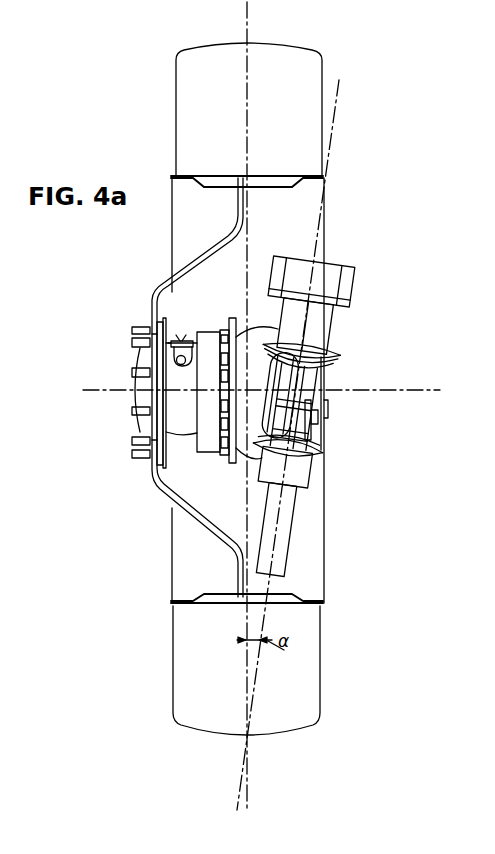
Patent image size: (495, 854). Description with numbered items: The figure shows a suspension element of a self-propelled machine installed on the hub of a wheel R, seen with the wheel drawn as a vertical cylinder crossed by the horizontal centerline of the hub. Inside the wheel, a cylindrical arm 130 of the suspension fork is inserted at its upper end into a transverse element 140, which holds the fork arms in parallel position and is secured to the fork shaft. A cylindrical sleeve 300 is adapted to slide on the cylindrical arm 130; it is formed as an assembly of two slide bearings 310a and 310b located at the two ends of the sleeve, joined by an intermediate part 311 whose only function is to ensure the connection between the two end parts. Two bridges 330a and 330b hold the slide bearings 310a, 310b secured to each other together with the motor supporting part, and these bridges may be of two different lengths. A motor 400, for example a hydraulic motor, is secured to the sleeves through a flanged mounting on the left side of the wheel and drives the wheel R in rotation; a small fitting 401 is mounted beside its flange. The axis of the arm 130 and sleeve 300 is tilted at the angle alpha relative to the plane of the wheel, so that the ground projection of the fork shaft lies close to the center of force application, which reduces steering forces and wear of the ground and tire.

The transverse element 140 is at (345, 289).
The slide bearing 310a is at (318, 331).
The cylindrical sleeve 300 is at (336, 344).
The bridge 330a is at (327, 347).
The intermediate part 311 is at (303, 408).
The bridge 330b is at (253, 450).
The slide bearing 310b is at (298, 467).
The cylindrical arm 130 is at (282, 542).
The sensor 401 is at (97, 388).
The motor 400 is at (175, 414).
The wheel R is at (298, 688).